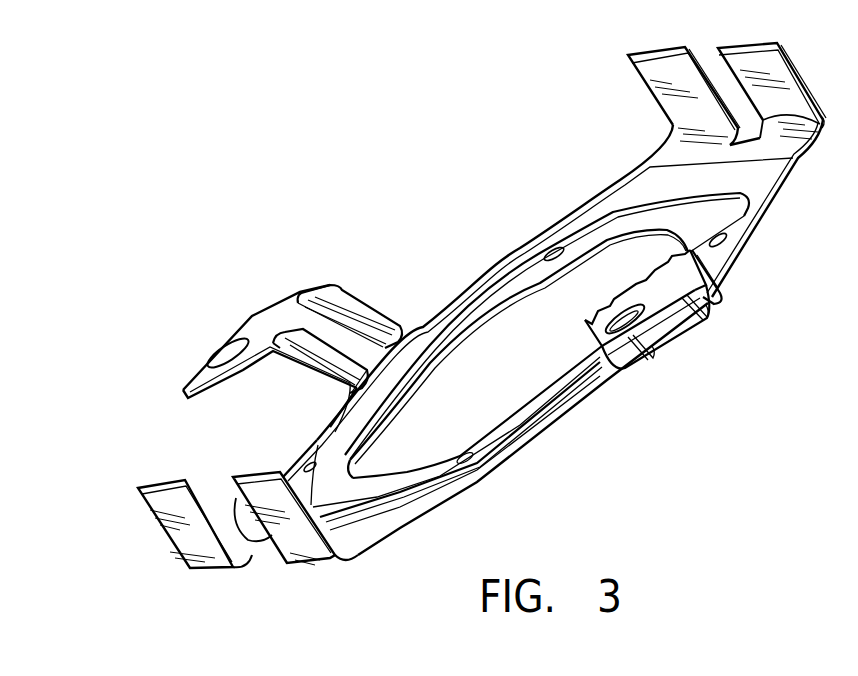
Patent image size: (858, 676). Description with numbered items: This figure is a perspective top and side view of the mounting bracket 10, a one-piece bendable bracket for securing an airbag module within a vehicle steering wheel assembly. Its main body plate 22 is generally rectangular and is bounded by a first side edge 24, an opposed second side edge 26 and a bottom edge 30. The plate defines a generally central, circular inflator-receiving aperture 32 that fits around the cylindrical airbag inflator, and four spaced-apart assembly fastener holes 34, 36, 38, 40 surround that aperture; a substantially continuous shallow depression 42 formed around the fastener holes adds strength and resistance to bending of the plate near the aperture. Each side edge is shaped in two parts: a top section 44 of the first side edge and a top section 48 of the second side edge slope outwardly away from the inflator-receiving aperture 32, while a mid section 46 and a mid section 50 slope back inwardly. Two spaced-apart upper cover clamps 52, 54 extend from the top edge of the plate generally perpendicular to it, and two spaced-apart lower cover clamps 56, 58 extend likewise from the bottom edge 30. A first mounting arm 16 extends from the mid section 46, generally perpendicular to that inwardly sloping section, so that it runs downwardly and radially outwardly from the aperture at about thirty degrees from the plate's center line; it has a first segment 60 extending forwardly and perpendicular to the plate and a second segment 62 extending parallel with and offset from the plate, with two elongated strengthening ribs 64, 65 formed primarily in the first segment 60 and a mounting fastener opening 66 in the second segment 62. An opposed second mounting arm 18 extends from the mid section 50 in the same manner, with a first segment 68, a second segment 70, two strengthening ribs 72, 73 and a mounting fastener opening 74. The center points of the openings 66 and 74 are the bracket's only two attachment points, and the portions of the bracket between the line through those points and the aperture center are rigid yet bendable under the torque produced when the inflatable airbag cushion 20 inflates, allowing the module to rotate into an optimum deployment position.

The mounting bracket 10 is at (446, 138).
The first mounting arm 16 is at (257, 300).
The second mounting arm 18 is at (653, 284).
The inflatable airbag cushion 20 is at (824, 121).
The main body plate 22 is at (617, 222).
The first side edge 24 is at (300, 456).
The second side edge 26 is at (480, 482).
The bottom edge 30 is at (348, 466).
The inflator-receiving aperture 32 is at (470, 333).
The assembly fastener hole 34 is at (546, 250).
The assembly fastener hole 36 is at (728, 237).
The assembly fastener hole 38 is at (466, 453).
The assembly fastener hole 40 is at (297, 460).
The shallow depression 42 is at (405, 503).
The top section of first side edge 44 is at (483, 273).
The mid section of first side edge 46 is at (330, 413).
The top section of second side edge 48 is at (788, 198).
The mid section of second side edge 50 is at (550, 422).
The upper cover clamp 52 is at (642, 50).
The upper cover clamp 54 is at (798, 72).
The lower cover clamp 56 is at (146, 499).
The lower cover clamp 58 is at (293, 566).
The first segment of first mounting arm 60 is at (348, 284).
The second segment of first mounting arm 62 is at (301, 298).
The strengthening rib 64 is at (364, 320).
The strengthening rib 65 is at (327, 392).
The mounting fastener opening 66 is at (214, 355).
The first segment of second mounting arm 68 is at (720, 277).
The second segment of second mounting arm 70 is at (677, 342).
The strengthening rib 72 is at (705, 318).
The strengthening rib 73 is at (645, 362).
The mounting fastener opening 74 is at (585, 323).